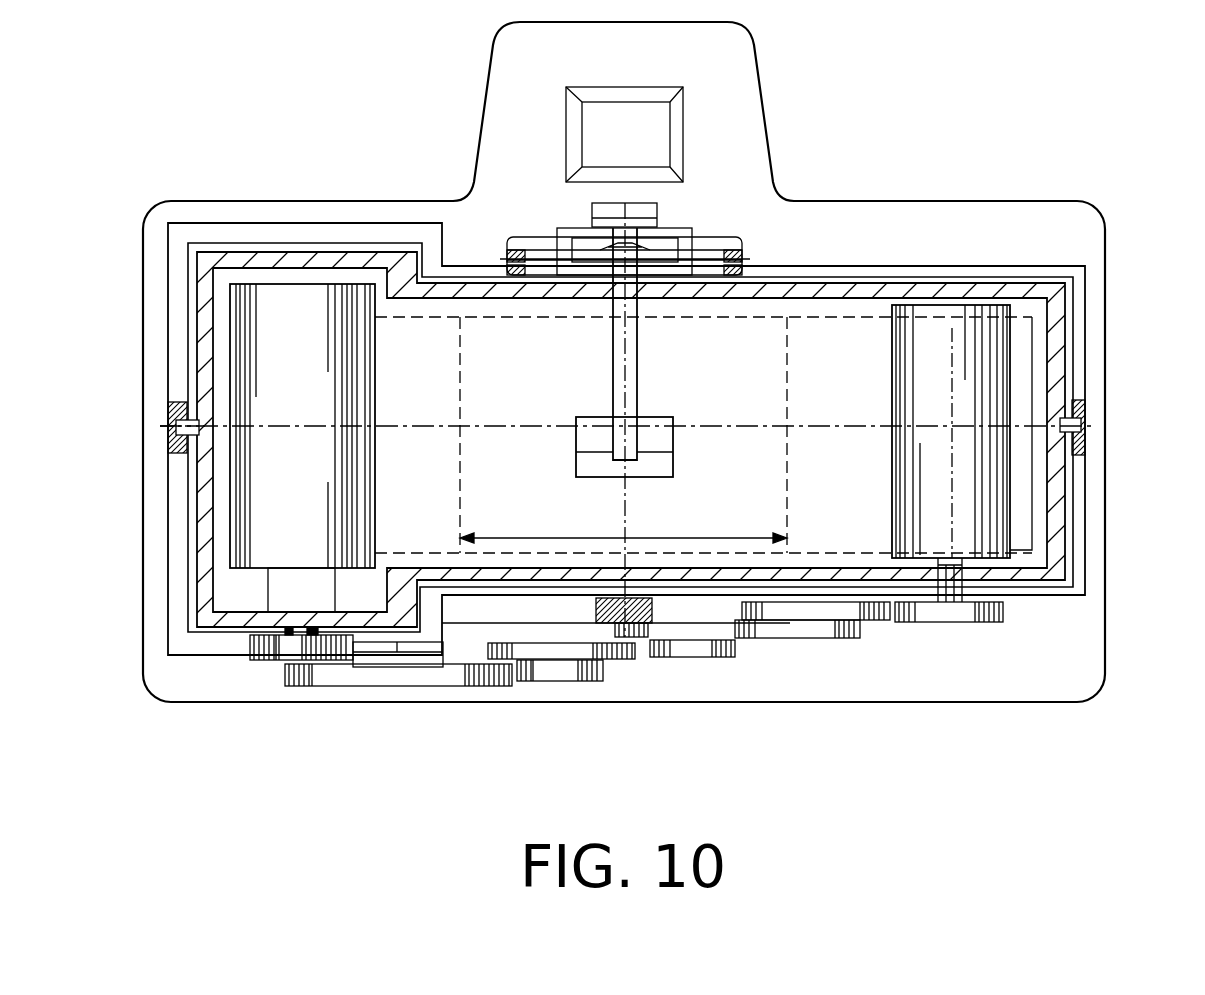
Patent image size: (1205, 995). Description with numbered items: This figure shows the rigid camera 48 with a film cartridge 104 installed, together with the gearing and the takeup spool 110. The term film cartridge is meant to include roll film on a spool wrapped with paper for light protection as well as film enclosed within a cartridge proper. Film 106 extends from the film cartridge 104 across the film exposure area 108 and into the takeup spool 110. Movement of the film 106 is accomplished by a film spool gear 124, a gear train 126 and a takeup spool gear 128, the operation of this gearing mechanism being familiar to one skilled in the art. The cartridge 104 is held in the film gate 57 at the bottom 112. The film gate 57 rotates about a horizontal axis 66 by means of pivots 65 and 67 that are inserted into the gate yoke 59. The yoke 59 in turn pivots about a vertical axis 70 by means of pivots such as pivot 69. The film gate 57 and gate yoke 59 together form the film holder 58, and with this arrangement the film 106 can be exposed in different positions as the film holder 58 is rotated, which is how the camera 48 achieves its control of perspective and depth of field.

The camera 48 is at (852, 135).
The film holder 58 is at (385, 128).
The gate yoke 59 is at (221, 235).
The film gate 57 is at (295, 250).
The pivot 65 is at (160, 426).
The pivot 67 is at (1098, 408).
The horizontal axis 66 is at (259, 427).
The film cartridge 104 is at (270, 508).
The bottom 112 is at (283, 593).
The takeup spool 110 is at (1000, 558).
The film exposure area 108 is at (548, 533).
The vertical axis 70 is at (625, 497).
The pivot 69 is at (597, 607).
The film spool gear 124 is at (268, 660).
The gear train 126 is at (780, 643).
The film 106 is at (838, 542).
The takeup spool gear 128 is at (952, 625).